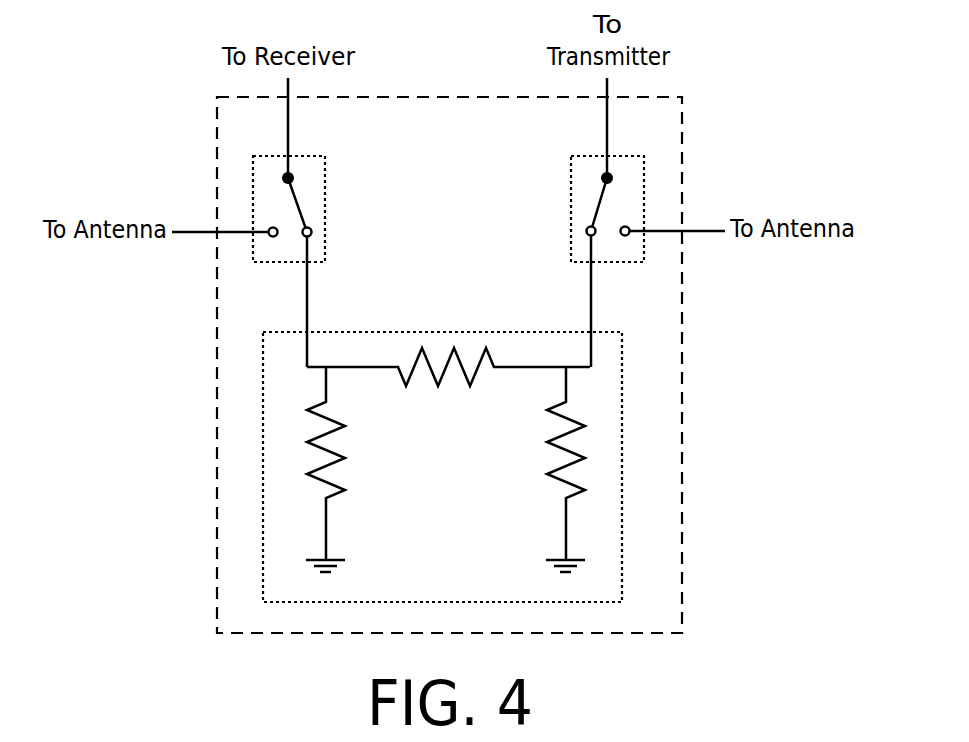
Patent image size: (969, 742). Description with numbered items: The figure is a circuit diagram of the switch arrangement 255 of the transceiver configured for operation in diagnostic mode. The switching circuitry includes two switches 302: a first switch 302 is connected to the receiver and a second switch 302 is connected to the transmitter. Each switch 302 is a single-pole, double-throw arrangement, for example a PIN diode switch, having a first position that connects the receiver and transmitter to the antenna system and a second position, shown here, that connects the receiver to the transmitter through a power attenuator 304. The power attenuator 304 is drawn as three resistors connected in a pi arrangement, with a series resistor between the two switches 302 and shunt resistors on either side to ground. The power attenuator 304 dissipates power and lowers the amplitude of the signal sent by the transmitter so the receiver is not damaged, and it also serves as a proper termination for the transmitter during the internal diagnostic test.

The switch arrangement 255 is at (722, 558).
The switch 302 is at (319, 155).
The power attenuator 304 is at (497, 333).